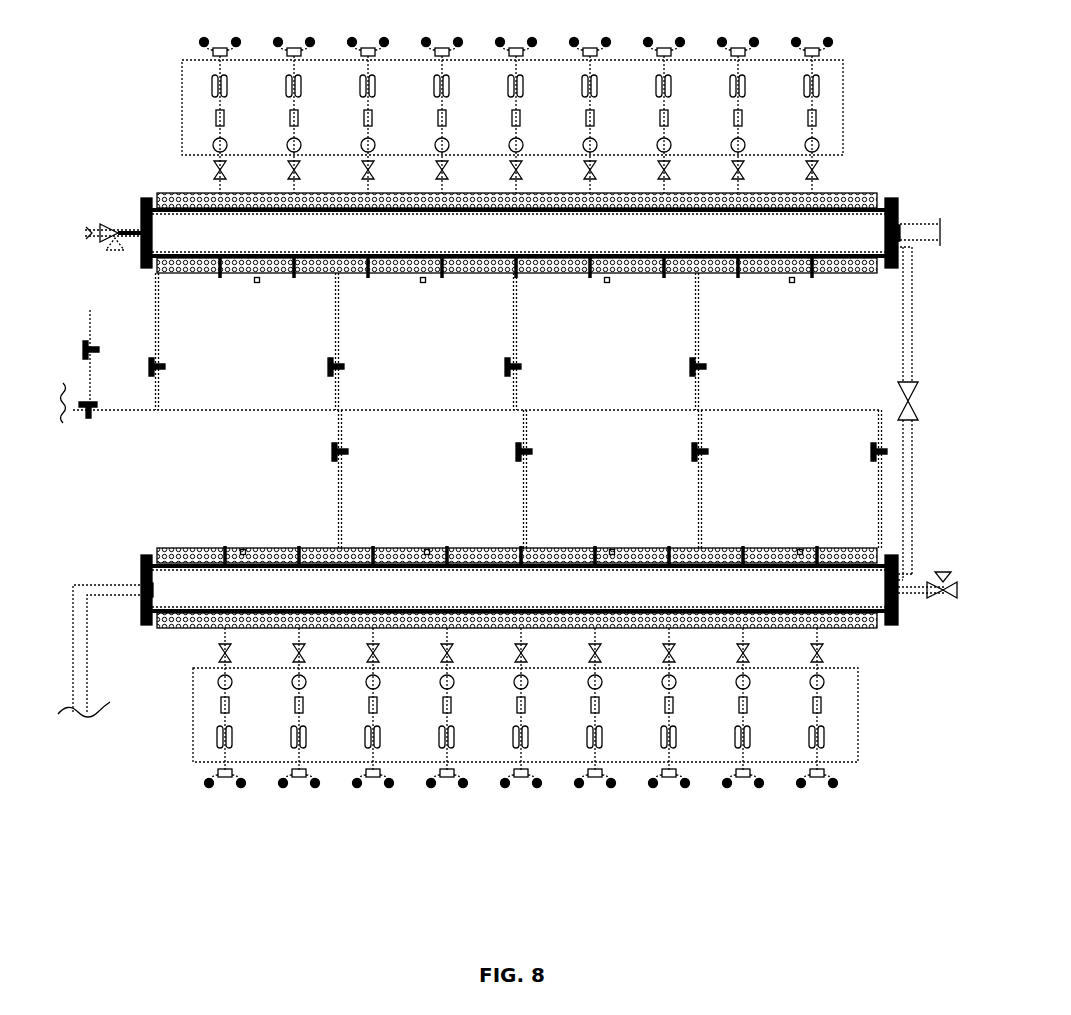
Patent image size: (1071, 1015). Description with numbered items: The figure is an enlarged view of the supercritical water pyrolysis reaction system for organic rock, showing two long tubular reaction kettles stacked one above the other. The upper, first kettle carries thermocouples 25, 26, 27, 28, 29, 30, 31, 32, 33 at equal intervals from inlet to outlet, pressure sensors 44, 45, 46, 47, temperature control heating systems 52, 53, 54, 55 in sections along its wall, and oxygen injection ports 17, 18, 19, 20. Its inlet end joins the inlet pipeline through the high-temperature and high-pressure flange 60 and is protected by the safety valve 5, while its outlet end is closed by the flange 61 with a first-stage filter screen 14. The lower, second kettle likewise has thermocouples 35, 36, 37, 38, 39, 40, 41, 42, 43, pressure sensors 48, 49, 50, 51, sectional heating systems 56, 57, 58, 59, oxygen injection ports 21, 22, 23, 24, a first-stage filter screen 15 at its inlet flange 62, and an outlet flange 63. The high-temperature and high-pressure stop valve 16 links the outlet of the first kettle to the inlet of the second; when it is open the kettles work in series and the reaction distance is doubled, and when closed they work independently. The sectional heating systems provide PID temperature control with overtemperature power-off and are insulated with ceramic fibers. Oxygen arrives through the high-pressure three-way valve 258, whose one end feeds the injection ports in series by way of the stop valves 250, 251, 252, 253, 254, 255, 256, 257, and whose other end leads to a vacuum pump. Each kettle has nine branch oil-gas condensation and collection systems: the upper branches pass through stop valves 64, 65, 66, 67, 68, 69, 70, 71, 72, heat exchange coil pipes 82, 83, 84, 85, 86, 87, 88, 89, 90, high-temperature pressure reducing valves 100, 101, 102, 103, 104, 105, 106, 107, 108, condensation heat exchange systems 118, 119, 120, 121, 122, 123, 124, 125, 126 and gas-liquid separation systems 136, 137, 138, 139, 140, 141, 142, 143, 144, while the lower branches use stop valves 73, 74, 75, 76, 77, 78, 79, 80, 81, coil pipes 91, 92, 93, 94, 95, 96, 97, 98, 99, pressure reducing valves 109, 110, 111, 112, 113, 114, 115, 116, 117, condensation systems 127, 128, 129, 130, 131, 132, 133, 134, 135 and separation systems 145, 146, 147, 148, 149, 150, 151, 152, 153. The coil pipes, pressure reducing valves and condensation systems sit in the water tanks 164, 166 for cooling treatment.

The safety valve 5 is at (122, 222).
The first-stage filter screen 14 is at (882, 234).
The first-stage filter screen 15 is at (155, 594).
The high-temperature and high-pressure stop valve 16 is at (922, 405).
The oxygen injection port 17 is at (160, 283).
The oxygen injection port 18 is at (339, 285).
The oxygen injection port 19 is at (517, 285).
The oxygen injection port 20 is at (699, 285).
The oxygen injection port 21 is at (877, 545).
The oxygen injection port 22 is at (698, 540).
The oxygen injection port 23 is at (522, 540).
The oxygen injection port 24 is at (338, 545).
The thermocouple 25 is at (222, 280).
The thermocouple 26 is at (295, 280).
The thermocouple 27 is at (369, 280).
The thermocouple 28 is at (443, 280).
The thermocouple 29 is at (518, 280).
The thermocouple 30 is at (592, 280).
The thermocouple 31 is at (666, 280).
The thermocouple 32 is at (740, 280).
The thermocouple 33 is at (814, 280).
The thermocouple 35 is at (816, 545).
The thermocouple 36 is at (742, 545).
The thermocouple 37 is at (668, 545).
The thermocouple 38 is at (594, 545).
The thermocouple 39 is at (520, 545).
The thermocouple 40 is at (446, 545).
The thermocouple 41 is at (372, 545).
The thermocouple 42 is at (298, 545).
The thermocouple 43 is at (224, 545).
The pressure sensor 44 is at (258, 283).
The pressure sensor 45 is at (424, 283).
The pressure sensor 46 is at (608, 283).
The pressure sensor 47 is at (793, 283).
The pressure sensor 48 is at (799, 548).
The pressure sensor 49 is at (611, 548).
The pressure sensor 50 is at (426, 548).
The pressure sensor 51 is at (243, 548).
The temperature control heating system in sections 52 is at (262, 212).
The temperature control heating system in sections 53 is at (430, 212).
The temperature control heating system in sections 54 is at (630, 212).
The temperature control heating system in sections 55 is at (797, 212).
The temperature control heating system in sections 56 is at (785, 568).
The temperature control heating system in sections 57 is at (663, 568).
The temperature control heating system in sections 58 is at (428, 568).
The temperature control heating system in sections 59 is at (283, 568).
The high-temperature and high-pressure flange 60 is at (150, 196).
The high-temperature and high-pressure flange 61 is at (888, 196).
The high-temperature and high-pressure flange 62 is at (897, 618).
The high-temperature and high-pressure flange 63 is at (140, 630).
The high-temperature and high-pressure stop valve 64 is at (235, 171).
The high-temperature and high-pressure stop valve 65 is at (309, 171).
The high-temperature and high-pressure stop valve 66 is at (383, 171).
The high-temperature and high-pressure stop valve 67 is at (457, 171).
The high-temperature and high-pressure stop valve 68 is at (531, 171).
The high-temperature and high-pressure stop valve 69 is at (605, 171).
The high-temperature and high-pressure stop valve 70 is at (679, 171).
The high-temperature and high-pressure stop valve 71 is at (753, 171).
The high-temperature and high-pressure stop valve 72 is at (827, 171).
The high-temperature and high-pressure stop valve 73 is at (832, 654).
The high-temperature and high-pressure stop valve 74 is at (758, 654).
The high-temperature and high-pressure stop valve 75 is at (684, 654).
The high-temperature and high-pressure stop valve 76 is at (610, 654).
The high-temperature and high-pressure stop valve 77 is at (536, 654).
The high-temperature and high-pressure stop valve 78 is at (462, 654).
The high-temperature and high-pressure stop valve 79 is at (388, 654).
The high-temperature and high-pressure stop valve 80 is at (314, 654).
The high-temperature and high-pressure stop valve 81 is at (240, 654).
The heat exchange coil pipe 82 is at (235, 145).
The heat exchange coil pipe 83 is at (309, 145).
The heat exchange coil pipe 84 is at (383, 145).
The heat exchange coil pipe 85 is at (457, 145).
The heat exchange coil pipe 86 is at (531, 145).
The heat exchange coil pipe 87 is at (605, 145).
The heat exchange coil pipe 88 is at (679, 145).
The heat exchange coil pipe 89 is at (753, 145).
The heat exchange coil pipe 90 is at (827, 145).
The heat exchange coil pipe 91 is at (831, 682).
The heat exchange coil pipe 92 is at (757, 682).
The heat exchange coil pipe 93 is at (683, 682).
The heat exchange coil pipe 94 is at (609, 682).
The heat exchange coil pipe 95 is at (535, 682).
The heat exchange coil pipe 96 is at (461, 682).
The heat exchange coil pipe 97 is at (387, 682).
The heat exchange coil pipe 98 is at (313, 682).
The heat exchange coil pipe 99 is at (239, 682).
The high-temperature pressure reducing valve 100 is at (243, 118).
The high-temperature pressure reducing valve 101 is at (317, 118).
The high-temperature pressure reducing valve 102 is at (391, 118).
The high-temperature pressure reducing valve 103 is at (465, 118).
The high-temperature pressure reducing valve 104 is at (539, 118).
The high-temperature pressure reducing valve 105 is at (613, 118).
The high-temperature pressure reducing valve 106 is at (687, 118).
The high-temperature pressure reducing valve 107 is at (761, 118).
The high-temperature pressure reducing valve 108 is at (835, 118).
The high-temperature pressure reducing valve 109 is at (840, 705).
The high-temperature pressure reducing valve 110 is at (766, 705).
The high-temperature pressure reducing valve 111 is at (692, 705).
The high-temperature pressure reducing valve 112 is at (618, 705).
The high-temperature pressure reducing valve 113 is at (544, 705).
The high-temperature pressure reducing valve 114 is at (470, 705).
The high-temperature pressure reducing valve 115 is at (396, 705).
The high-temperature pressure reducing valve 116 is at (322, 705).
The high-temperature pressure reducing valve 117 is at (248, 705).
The condensation heat exchange system 118 is at (242, 86).
The condensation heat exchange system 119 is at (316, 86).
The condensation heat exchange system 120 is at (390, 86).
The condensation heat exchange system 121 is at (464, 86).
The condensation heat exchange system 122 is at (538, 86).
The condensation heat exchange system 123 is at (612, 86).
The condensation heat exchange system 124 is at (686, 86).
The condensation heat exchange system 125 is at (760, 86).
The condensation heat exchange system 126 is at (834, 86).
The condensation heat exchange system 127 is at (840, 738).
The condensation heat exchange system 128 is at (766, 738).
The condensation heat exchange system 129 is at (692, 738).
The condensation heat exchange system 130 is at (618, 738).
The condensation heat exchange system 131 is at (544, 738).
The condensation heat exchange system 132 is at (470, 738).
The condensation heat exchange system 133 is at (396, 738).
The condensation heat exchange system 134 is at (322, 738).
The condensation heat exchange system 135 is at (248, 738).
The gas-liquid separation system 136 is at (222, 31).
The gas-liquid separation system 137 is at (296, 31).
The gas-liquid separation system 138 is at (370, 31).
The gas-liquid separation system 139 is at (444, 31).
The gas-liquid separation system 140 is at (518, 31).
The gas-liquid separation system 141 is at (592, 31).
The gas-liquid separation system 142 is at (666, 31).
The gas-liquid separation system 143 is at (740, 31).
The gas-liquid separation system 144 is at (814, 31).
The gas-liquid separation system 145 is at (819, 792).
The gas-liquid separation system 146 is at (745, 792).
The gas-liquid separation system 147 is at (671, 792).
The gas-liquid separation system 148 is at (597, 792).
The gas-liquid separation system 149 is at (523, 792).
The gas-liquid separation system 150 is at (449, 792).
The gas-liquid separation system 151 is at (375, 792).
The gas-liquid separation system 152 is at (301, 792).
The gas-liquid separation system 153 is at (227, 792).
The water tank 164 is at (197, 107).
The water tank 166 is at (196, 714).
The high-temperature and high-pressure stop valve 250 is at (173, 368).
The high-temperature and high-pressure stop valve 251 is at (353, 368).
The high-temperature and high-pressure stop valve 252 is at (530, 368).
The high-temperature and high-pressure stop valve 253 is at (715, 368).
The high-temperature and high-pressure stop valve 254 is at (860, 453).
The high-temperature and high-pressure stop valve 255 is at (717, 453).
The high-temperature and high-pressure stop valve 256 is at (541, 453).
The high-temperature and high-pressure stop valve 257 is at (357, 453).
The high-pressure three-way valve 258 is at (92, 414).